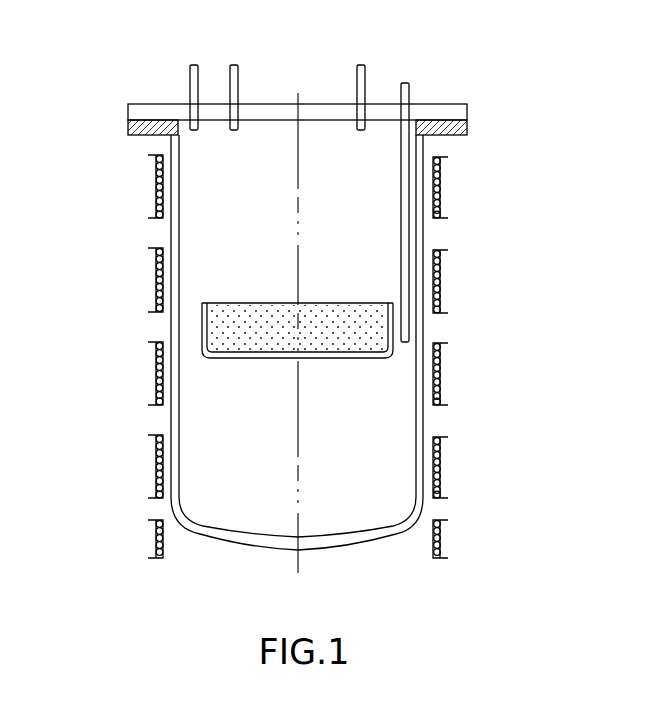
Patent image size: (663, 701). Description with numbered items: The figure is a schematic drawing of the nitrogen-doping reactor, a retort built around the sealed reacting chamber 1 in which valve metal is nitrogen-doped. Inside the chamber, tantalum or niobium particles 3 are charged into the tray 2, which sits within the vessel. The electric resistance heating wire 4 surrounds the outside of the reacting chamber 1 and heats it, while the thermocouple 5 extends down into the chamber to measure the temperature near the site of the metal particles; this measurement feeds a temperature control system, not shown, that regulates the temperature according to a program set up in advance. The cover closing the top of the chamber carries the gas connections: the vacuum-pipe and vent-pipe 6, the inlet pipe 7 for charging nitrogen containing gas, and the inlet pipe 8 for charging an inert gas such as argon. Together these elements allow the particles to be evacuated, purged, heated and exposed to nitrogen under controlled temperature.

The sealed reacting chamber 1 is at (266, 86).
The tray 2 is at (229, 285).
The tantalum or niobium particles 3 is at (222, 372).
The electric resistance heating wire 4 is at (350, 356).
The thermocouple 5 is at (467, 172).
The vacuum-pipe and vent-pipe 6 is at (393, 66).
The inlet pipe for nitrogen containing gas 7 is at (265, 66).
The inlet pipe for inert gas 8 is at (172, 66).